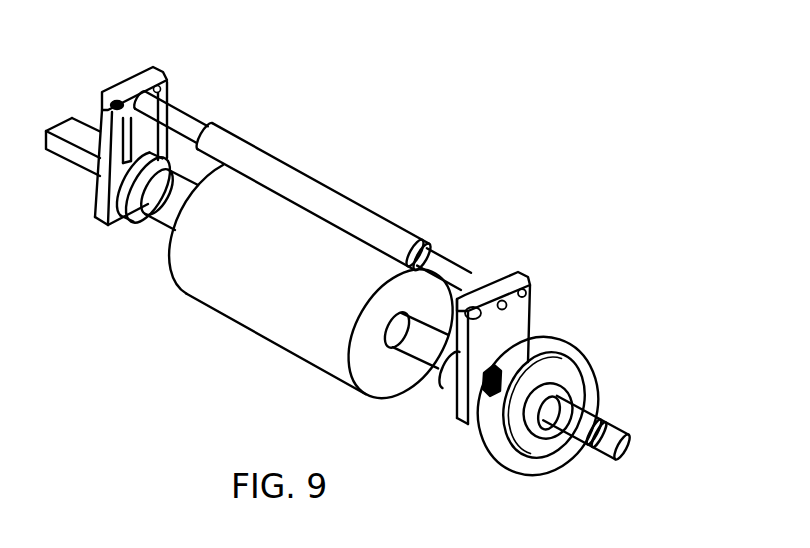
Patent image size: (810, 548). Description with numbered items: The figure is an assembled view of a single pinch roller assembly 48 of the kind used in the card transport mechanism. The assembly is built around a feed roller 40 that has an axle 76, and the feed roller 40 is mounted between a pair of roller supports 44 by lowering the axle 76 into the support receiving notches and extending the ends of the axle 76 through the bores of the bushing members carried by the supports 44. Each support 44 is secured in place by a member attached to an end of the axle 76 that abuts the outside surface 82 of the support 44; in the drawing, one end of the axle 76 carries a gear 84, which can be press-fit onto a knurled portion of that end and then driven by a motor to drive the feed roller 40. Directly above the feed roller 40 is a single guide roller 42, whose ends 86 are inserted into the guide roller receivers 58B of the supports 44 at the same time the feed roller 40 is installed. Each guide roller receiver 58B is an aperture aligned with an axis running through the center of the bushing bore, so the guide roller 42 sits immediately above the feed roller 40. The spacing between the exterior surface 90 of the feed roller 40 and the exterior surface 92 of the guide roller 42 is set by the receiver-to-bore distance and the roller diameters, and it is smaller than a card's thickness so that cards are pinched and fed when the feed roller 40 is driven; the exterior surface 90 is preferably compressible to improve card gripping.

The feed roller 40 is at (227, 287).
The guide roller 42 is at (353, 210).
The roller support 44 is at (529, 274).
The single pinch roller assembly 48 is at (394, 145).
The guide roller receiver 58B is at (138, 90).
The axle 76 is at (157, 207).
The outside surface 82 is at (524, 317).
The gear 84 is at (598, 382).
The ends 86 is at (502, 300).
The exterior surface 90 is at (300, 335).
The exterior surface 92 is at (257, 158).